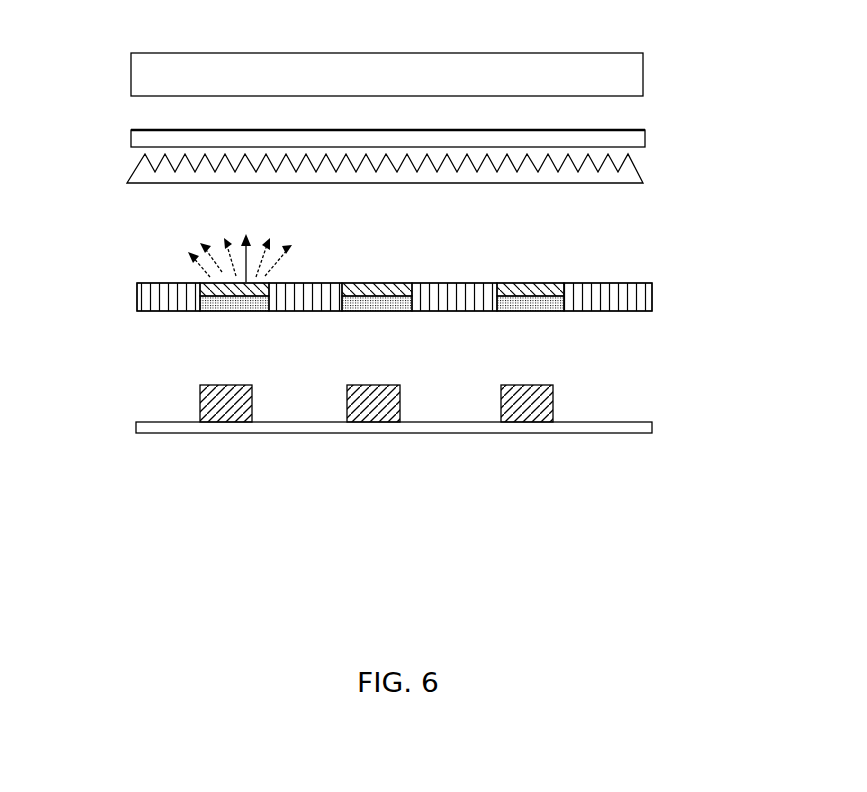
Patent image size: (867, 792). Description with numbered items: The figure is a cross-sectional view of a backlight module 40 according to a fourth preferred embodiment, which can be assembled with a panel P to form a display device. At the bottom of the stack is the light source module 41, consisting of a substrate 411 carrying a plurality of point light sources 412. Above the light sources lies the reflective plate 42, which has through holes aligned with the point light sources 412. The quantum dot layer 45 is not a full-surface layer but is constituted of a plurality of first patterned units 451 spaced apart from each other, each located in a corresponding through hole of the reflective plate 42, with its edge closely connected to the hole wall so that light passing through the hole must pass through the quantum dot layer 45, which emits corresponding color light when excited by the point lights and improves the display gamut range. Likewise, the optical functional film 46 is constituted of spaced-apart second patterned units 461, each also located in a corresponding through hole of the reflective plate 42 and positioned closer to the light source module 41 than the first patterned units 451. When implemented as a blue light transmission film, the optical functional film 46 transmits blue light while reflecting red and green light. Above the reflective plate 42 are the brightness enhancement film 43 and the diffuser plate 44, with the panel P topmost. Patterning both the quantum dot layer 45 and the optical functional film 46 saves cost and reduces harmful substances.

The panel P is at (643, 70).
The backlight module 40 is at (108, 445).
The light source module 41 is at (630, 518).
The substrate 411 is at (608, 433).
The point light sources 412 is at (515, 423).
The reflective plate 42 is at (652, 298).
The brightness enhancement film 43 is at (643, 183).
The diffuser plate 44 is at (645, 139).
The quantum dot layer 45 is at (601, 204).
The first patterned units 451 is at (380, 283).
The optical functional film 46 is at (659, 326).
The second patterned units 461 is at (543, 311).